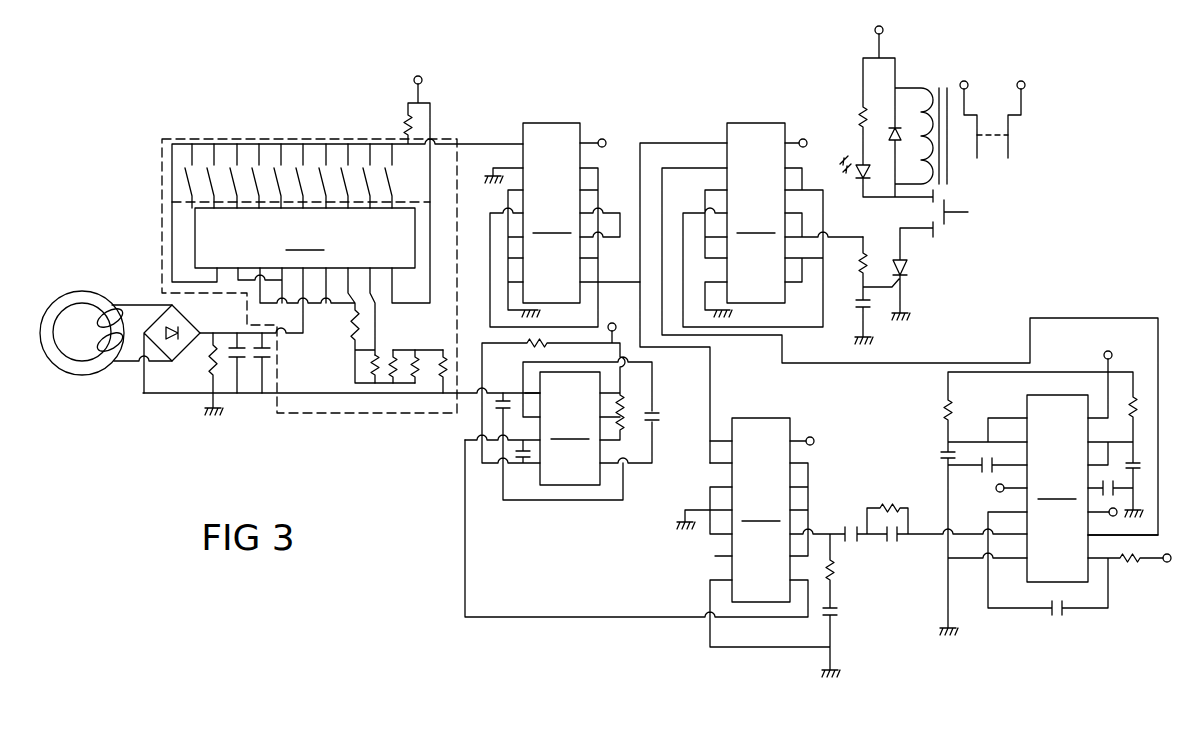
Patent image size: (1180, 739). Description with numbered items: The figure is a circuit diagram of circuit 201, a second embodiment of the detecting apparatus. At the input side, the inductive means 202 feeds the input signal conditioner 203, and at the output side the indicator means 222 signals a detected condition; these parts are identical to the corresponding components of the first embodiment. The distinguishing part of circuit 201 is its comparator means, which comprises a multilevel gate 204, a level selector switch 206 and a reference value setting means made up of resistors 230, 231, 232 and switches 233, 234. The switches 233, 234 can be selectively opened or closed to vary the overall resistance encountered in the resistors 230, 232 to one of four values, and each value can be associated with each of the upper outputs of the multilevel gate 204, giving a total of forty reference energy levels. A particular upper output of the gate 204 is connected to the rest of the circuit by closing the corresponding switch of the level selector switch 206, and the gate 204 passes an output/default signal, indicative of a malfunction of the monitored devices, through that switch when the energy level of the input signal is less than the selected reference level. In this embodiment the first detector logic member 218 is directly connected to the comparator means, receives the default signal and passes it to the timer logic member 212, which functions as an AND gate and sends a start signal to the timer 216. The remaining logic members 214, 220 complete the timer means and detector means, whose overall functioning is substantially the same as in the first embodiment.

The circuit 201 is at (157, 189).
The inductive means 202 is at (78, 372).
The input signal conditioner 203 is at (166, 400).
The multilevel gate 204 is at (305, 238).
The level selector switch 206 is at (223, 168).
The timer logic member 212 is at (746, 547).
The integrated circuit 214 is at (562, 411).
The timer 216 is at (1055, 493).
The first detector logic member 218 is at (562, 225).
The integrated circuit 220 is at (899, 329).
The indicator means 222 is at (918, 78).
The resistor 230 is at (435, 372).
The resistor 231 is at (393, 354).
The resistor 232 is at (370, 362).
The switch 233 is at (417, 357).
The switch 234 is at (347, 367).